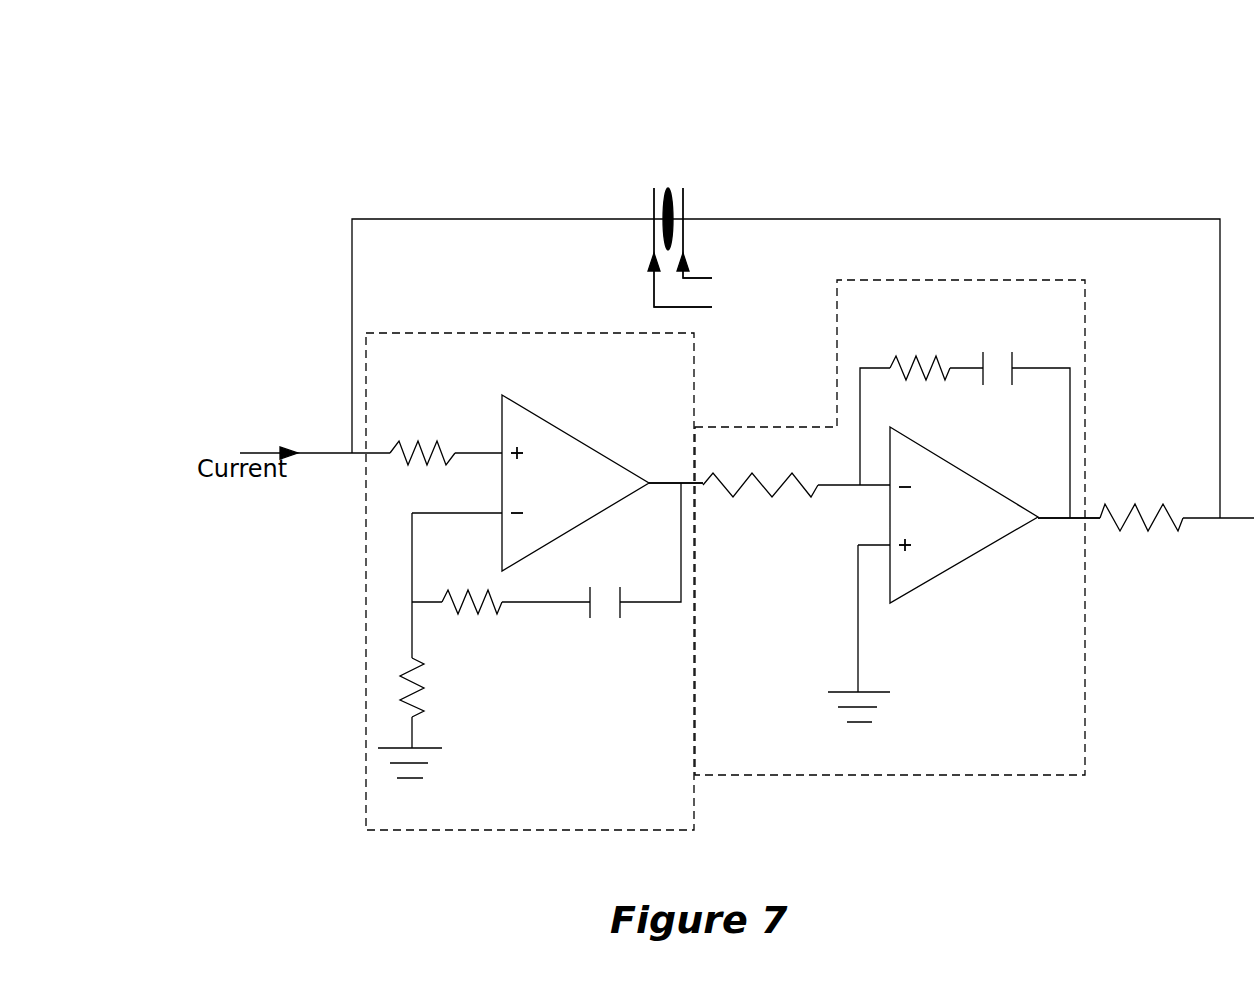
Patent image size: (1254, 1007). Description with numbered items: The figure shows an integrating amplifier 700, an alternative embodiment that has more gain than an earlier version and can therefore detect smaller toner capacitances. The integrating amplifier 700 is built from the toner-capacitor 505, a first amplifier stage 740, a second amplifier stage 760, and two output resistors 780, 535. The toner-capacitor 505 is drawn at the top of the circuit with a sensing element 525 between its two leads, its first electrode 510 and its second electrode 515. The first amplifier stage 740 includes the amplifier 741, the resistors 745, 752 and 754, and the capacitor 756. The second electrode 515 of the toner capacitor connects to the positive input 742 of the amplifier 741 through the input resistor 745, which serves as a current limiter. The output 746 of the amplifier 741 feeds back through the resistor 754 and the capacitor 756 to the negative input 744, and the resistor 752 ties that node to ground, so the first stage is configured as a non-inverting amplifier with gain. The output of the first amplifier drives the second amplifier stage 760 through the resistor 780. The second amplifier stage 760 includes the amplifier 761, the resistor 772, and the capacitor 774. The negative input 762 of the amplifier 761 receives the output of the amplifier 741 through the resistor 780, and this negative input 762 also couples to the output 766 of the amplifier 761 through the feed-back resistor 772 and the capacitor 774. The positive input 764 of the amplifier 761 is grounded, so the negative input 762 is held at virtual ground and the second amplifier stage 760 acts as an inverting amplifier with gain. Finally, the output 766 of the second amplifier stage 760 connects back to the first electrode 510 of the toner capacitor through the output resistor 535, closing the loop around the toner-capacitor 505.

The integrating amplifier 700 is at (971, 147).
The toner-capacitor 505 is at (689, 183).
The magnetic core / sensing element 525 is at (692, 194).
The first electrode 510 is at (730, 240).
The second electrode 515 is at (716, 255).
The first amplifier stage 740 is at (499, 850).
The input resistor 745 is at (422, 439).
The amplifier 741 is at (575, 483).
The positive input 742 is at (535, 429).
The negative input 744 is at (536, 531).
The output of first op amp 746 is at (648, 463).
The resistor 754 is at (472, 616).
The capacitor 756 is at (605, 622).
The resistor 752 is at (439, 687).
The output resistor 780 is at (760, 508).
The second amplifier stage 760 is at (912, 803).
The feed-back resistor 772 is at (920, 346).
The capacitor 774 is at (997, 348).
The amplifier 761 is at (964, 515).
The negative input 762 is at (924, 459).
The positive input 764 is at (918, 572).
The output 766 is at (1048, 497).
The output resistor 535 is at (1141, 503).